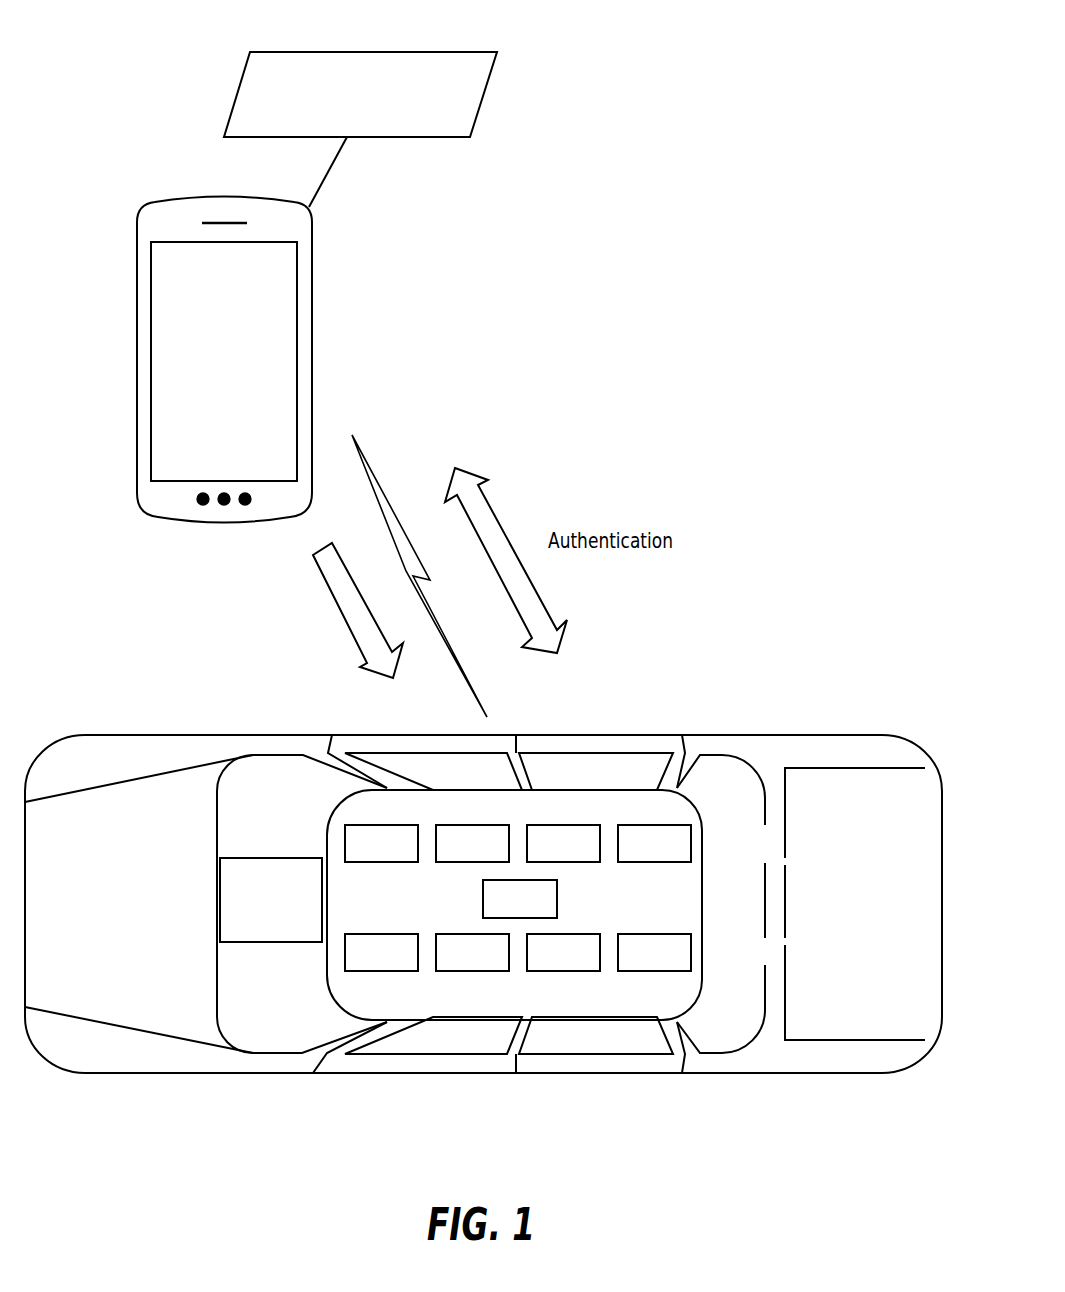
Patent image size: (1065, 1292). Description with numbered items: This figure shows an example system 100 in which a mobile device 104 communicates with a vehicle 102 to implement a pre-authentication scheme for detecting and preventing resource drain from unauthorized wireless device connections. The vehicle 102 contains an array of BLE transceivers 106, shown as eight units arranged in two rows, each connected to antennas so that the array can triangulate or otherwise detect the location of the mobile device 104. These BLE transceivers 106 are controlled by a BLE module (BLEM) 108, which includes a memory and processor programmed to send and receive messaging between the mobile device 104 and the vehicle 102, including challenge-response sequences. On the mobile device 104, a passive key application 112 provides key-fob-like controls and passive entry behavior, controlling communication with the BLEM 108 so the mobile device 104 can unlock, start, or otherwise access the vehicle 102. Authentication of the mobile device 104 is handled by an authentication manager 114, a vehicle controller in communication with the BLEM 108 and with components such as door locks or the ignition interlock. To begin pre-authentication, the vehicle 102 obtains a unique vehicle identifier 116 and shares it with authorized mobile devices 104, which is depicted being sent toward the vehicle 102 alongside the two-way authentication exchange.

The system 100 is at (145, 32).
The vehicle 102 is at (155, 930).
The mobile device 104 is at (210, 378).
The BLE transceivers 106 is at (715, 817).
The BLE module (BLEM) 108 is at (558, 897).
The passive key application 112 is at (345, 120).
The authentication manager 114 is at (272, 858).
The unique vehicle identifier 116 is at (258, 690).